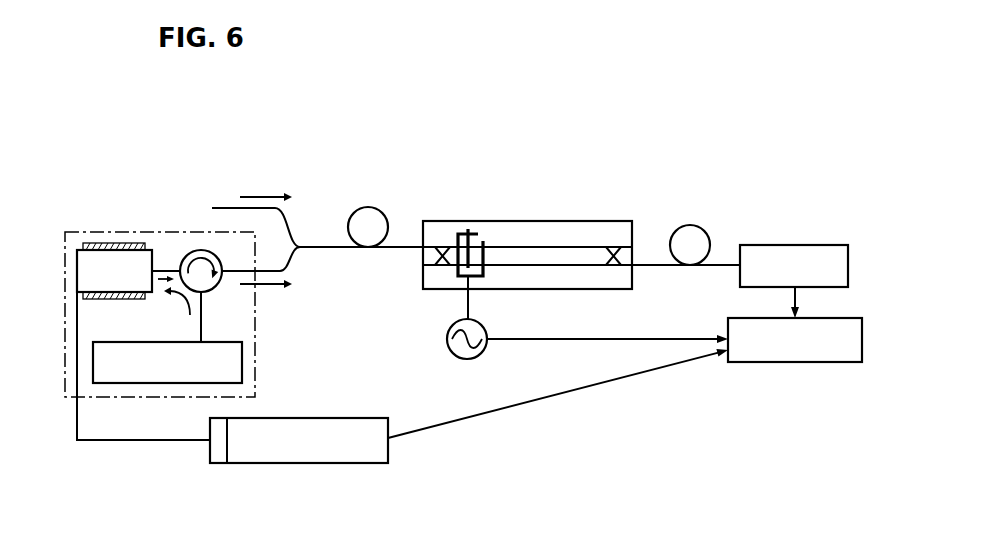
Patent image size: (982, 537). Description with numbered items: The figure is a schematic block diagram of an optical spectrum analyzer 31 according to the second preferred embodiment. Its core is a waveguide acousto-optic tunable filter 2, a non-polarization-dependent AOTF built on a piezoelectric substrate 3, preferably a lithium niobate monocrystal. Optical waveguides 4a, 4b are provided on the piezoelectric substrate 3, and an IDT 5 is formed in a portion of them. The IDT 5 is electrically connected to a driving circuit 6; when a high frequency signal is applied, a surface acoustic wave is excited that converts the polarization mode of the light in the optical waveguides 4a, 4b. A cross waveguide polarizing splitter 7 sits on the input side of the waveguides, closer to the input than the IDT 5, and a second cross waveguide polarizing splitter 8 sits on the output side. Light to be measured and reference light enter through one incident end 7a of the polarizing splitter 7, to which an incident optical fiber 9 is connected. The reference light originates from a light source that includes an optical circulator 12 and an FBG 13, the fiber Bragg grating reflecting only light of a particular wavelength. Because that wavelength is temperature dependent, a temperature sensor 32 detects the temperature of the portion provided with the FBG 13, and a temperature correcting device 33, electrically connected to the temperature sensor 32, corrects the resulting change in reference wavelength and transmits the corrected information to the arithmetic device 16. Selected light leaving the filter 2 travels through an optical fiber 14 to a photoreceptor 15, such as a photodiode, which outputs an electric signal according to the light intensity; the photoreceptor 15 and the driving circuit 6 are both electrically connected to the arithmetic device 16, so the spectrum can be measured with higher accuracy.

The optical spectrum analyzer 31 is at (123, 128).
The temperature sensor 32 is at (100, 243).
The FBG 13 is at (155, 260).
The optical circulator 12 is at (212, 290).
The temperature correcting device 33 is at (293, 463).
The incident optical fiber 9 is at (372, 207).
The incident end 7a is at (420, 248).
The waveguide acousto-optic tunable filter 2 is at (547, 214).
The piezoelectric substrate 3 is at (582, 220).
The optical waveguide 4a is at (503, 250).
The optical waveguide 4b is at (558, 268).
The cross waveguide polarizing splitter 7 is at (442, 247).
The cross waveguide polarizing splitter 8 is at (613, 245).
The IDT 5 is at (472, 240).
The driving circuit 6 is at (473, 358).
The optical fiber 14 is at (695, 225).
The photoreceptor 15 is at (773, 246).
The arithmetic device 16 is at (770, 362).